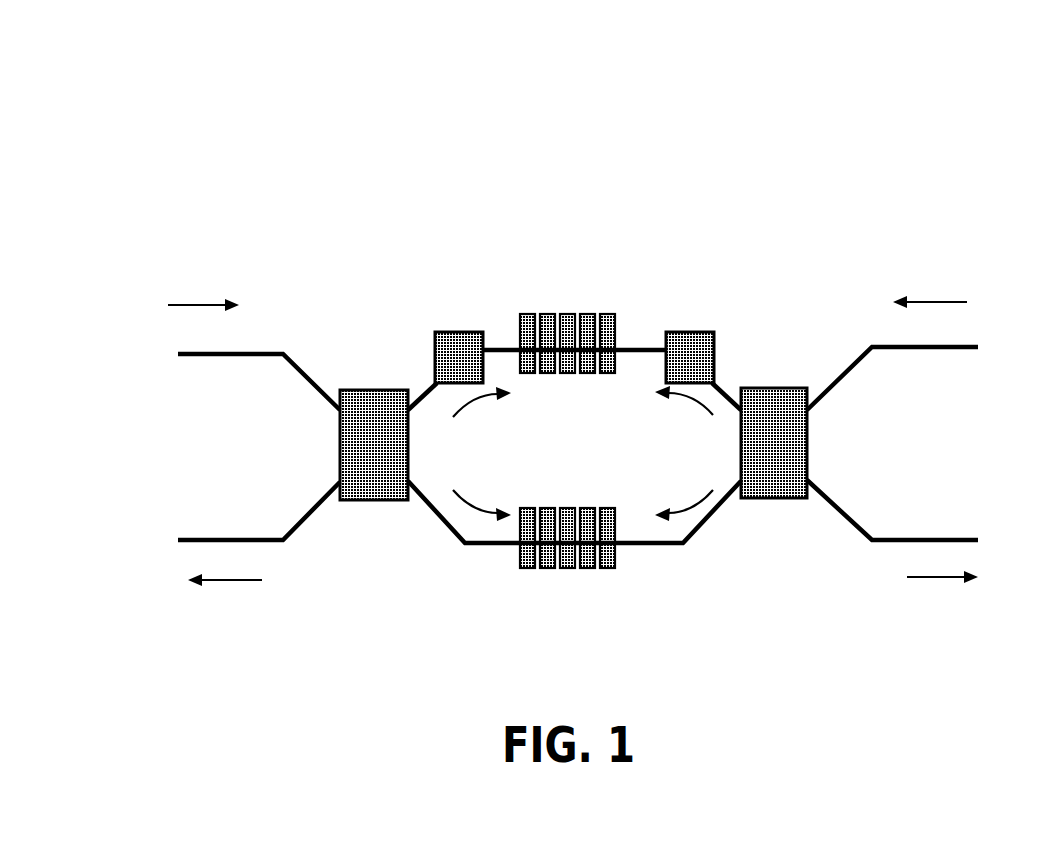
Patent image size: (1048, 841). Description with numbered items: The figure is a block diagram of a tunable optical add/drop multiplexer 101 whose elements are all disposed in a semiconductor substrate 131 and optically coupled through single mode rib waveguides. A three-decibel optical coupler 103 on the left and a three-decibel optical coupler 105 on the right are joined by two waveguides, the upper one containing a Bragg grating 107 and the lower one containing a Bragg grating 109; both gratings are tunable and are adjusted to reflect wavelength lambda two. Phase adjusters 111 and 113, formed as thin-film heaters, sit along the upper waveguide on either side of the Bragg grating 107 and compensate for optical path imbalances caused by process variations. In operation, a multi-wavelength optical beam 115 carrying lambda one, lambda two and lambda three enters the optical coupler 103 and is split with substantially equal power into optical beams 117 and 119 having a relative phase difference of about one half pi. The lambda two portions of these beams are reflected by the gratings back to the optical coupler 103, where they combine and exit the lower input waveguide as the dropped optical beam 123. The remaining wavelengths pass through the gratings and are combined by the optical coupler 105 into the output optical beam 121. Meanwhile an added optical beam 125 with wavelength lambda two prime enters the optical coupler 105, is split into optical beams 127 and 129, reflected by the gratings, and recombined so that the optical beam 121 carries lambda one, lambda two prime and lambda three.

The tunable add/drop multiplexer 101 is at (850, 104).
The 3 dB optical coupler 103 is at (367, 502).
The 3 dB optical coupler 105 is at (780, 505).
The Bragg grating 107 is at (570, 292).
The Bragg grating 109 is at (570, 575).
The phase adjuster 111 is at (440, 323).
The phase adjuster 113 is at (707, 323).
The optical beam 115 is at (175, 312).
The optical beam 117 is at (478, 408).
The optical beam 119 is at (482, 496).
The optical beam 121 is at (912, 589).
The optical beam 123 is at (252, 588).
The optical beam 125 is at (962, 292).
The optical beam 127 is at (697, 408).
The optical beam 129 is at (692, 501).
The semiconductor substrate 131 is at (732, 666).